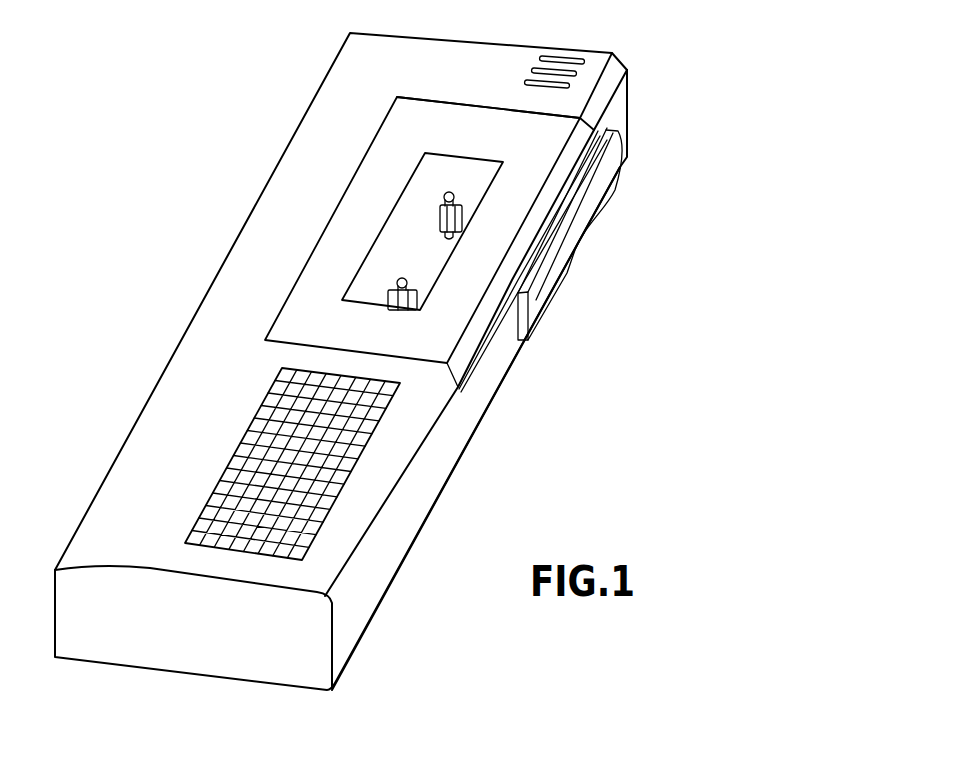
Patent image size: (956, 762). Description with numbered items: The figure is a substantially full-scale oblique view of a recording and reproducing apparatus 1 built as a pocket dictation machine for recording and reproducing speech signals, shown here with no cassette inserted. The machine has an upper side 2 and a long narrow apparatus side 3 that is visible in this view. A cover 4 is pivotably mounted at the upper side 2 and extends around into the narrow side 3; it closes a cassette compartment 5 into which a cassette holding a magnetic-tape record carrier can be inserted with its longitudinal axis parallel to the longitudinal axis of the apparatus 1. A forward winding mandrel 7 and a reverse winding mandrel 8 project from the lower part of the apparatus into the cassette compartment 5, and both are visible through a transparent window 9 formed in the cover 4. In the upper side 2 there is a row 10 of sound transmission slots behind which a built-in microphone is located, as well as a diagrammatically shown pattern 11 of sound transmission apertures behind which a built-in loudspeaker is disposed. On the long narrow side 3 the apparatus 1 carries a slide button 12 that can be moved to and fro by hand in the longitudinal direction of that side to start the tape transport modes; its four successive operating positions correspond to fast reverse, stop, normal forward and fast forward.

The recording and reproducing apparatus 1 is at (172, 336).
The upper side 2 is at (449, 46).
The long narrow apparatus side 3 is at (418, 513).
The cover 4 is at (457, 366).
The cassette compartment 5 is at (470, 197).
The forward winding mandrel 7 is at (402, 278).
The reverse winding mandrel 8 is at (443, 197).
The transparent window 9 is at (436, 153).
The row of sound transmission slots 10 is at (518, 88).
The pattern of sound transmission apertures 11 is at (218, 475).
The slide button 12 is at (597, 223).